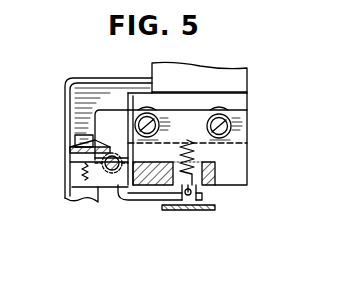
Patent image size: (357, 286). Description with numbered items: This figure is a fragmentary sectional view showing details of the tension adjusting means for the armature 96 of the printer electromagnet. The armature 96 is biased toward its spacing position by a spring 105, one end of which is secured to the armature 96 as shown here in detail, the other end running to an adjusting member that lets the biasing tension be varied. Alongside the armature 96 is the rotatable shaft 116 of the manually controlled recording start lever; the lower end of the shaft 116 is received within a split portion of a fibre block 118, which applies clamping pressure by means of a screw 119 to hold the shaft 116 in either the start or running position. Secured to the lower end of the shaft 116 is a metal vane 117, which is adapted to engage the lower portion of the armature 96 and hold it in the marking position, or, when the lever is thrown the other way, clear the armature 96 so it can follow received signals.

The armature 96 is at (197, 212).
The spring 105 is at (200, 151).
The rotatable shaft 116 is at (112, 175).
The metal vane 117 is at (145, 198).
The fibre block 118 is at (78, 178).
The screw 119 is at (93, 132).